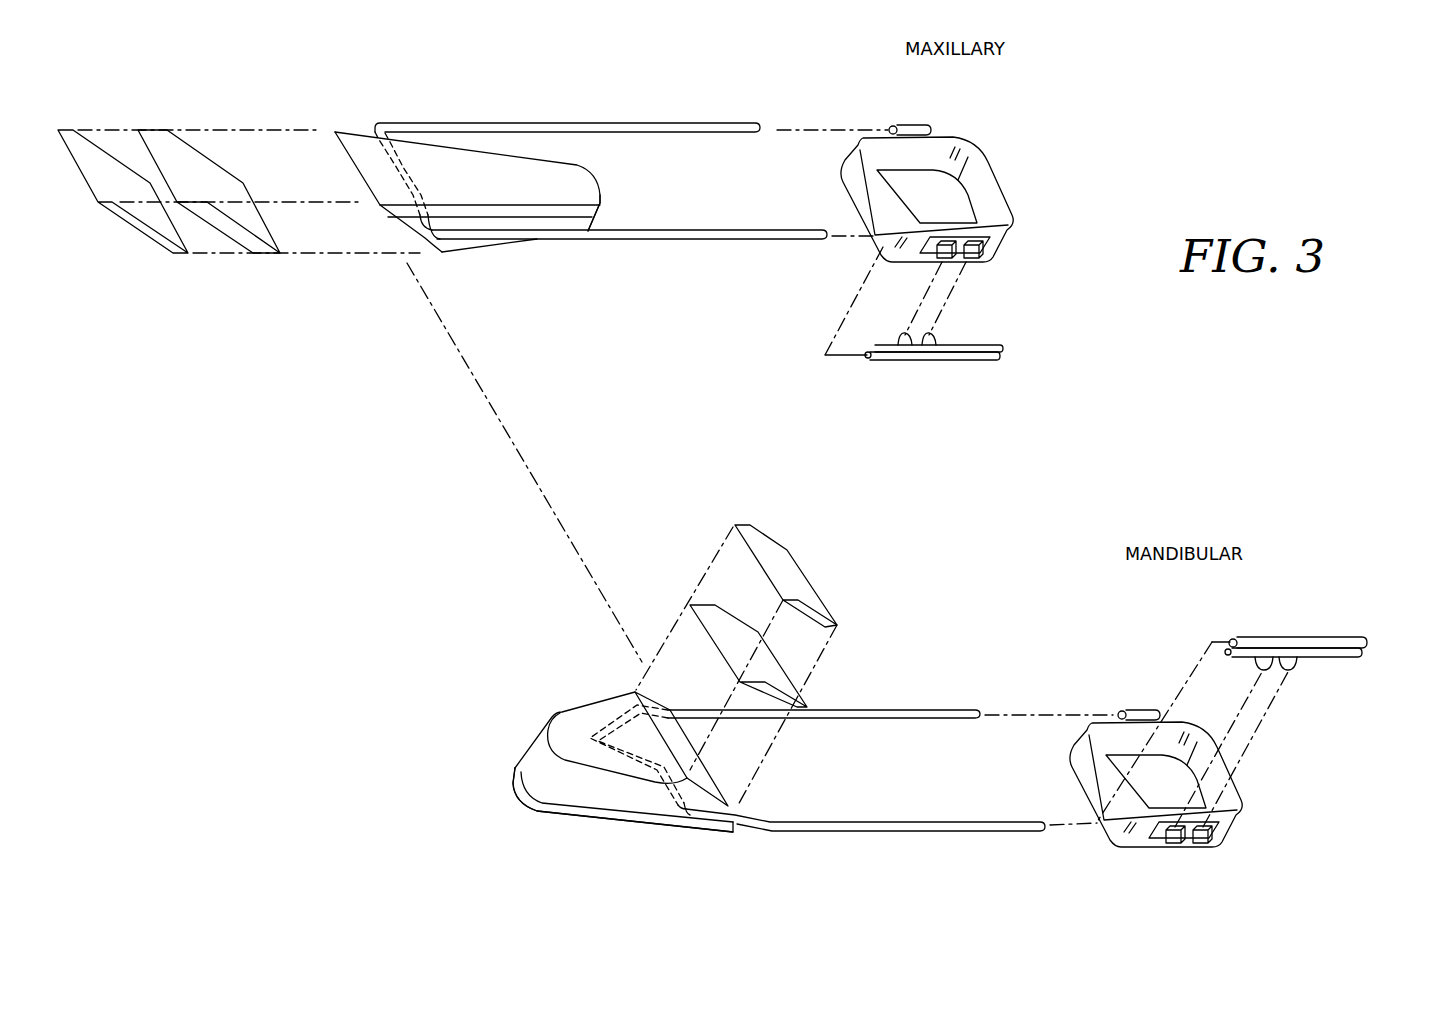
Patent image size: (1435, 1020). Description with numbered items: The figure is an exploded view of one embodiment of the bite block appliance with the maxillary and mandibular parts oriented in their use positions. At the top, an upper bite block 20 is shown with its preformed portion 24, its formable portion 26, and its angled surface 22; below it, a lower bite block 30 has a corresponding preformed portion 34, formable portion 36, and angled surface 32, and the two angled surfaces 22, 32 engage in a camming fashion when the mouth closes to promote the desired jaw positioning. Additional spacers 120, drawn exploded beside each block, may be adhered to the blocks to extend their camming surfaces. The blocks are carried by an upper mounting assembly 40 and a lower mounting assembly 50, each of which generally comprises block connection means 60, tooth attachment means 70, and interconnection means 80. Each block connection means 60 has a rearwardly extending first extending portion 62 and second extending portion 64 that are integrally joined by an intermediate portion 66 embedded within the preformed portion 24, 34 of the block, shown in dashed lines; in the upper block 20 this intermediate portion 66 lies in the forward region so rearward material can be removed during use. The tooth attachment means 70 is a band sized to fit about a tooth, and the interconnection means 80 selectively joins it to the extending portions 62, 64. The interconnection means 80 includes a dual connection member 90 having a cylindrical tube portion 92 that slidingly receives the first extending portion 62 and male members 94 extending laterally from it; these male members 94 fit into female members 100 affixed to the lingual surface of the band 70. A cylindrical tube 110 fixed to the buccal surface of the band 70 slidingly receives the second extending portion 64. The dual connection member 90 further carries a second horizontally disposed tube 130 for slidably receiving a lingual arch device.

The upper bite block 20 is at (487, 172).
The angled surface 22 is at (435, 244).
The preformed portion 24 is at (481, 242).
The formable portion 26 is at (594, 217).
The lower bite block 30 is at (613, 795).
The angled surface 32 is at (713, 778).
The preformed portion 34 is at (532, 750).
The formable portion 36 is at (523, 792).
The upper mounting assembly 40 is at (808, 302).
The lower mounting assembly 50 is at (1060, 850).
The block connection means 60 is at (710, 462).
The first extending portion 62 is at (747, 240).
The second extending portion 64 is at (730, 127).
The intermediate portion 66 is at (430, 166).
The tooth attachment means 70 is at (1078, 486).
The interconnection means 80 is at (1143, 544).
The dual connection member 90 is at (1143, 519).
The cylindrical tube portion 92 is at (977, 361).
The male members 94 is at (903, 338).
The female members 100 is at (950, 262).
The cylindrical tube 110 is at (917, 127).
The spacers 120 is at (103, 155).
The second horizontally disposed tube 130 is at (1003, 352).